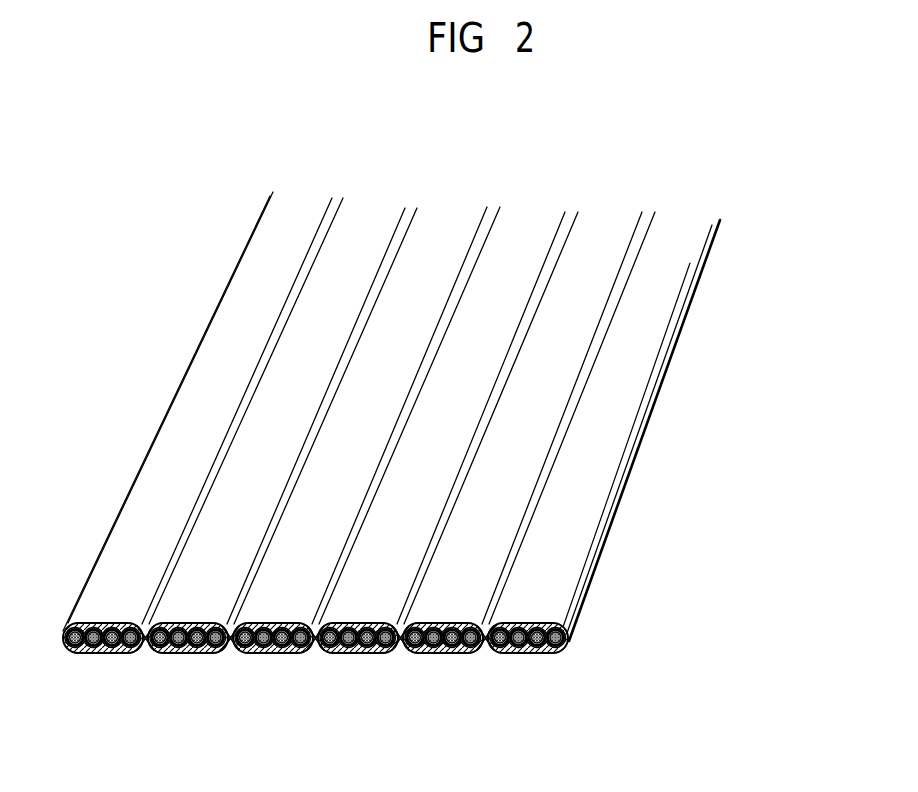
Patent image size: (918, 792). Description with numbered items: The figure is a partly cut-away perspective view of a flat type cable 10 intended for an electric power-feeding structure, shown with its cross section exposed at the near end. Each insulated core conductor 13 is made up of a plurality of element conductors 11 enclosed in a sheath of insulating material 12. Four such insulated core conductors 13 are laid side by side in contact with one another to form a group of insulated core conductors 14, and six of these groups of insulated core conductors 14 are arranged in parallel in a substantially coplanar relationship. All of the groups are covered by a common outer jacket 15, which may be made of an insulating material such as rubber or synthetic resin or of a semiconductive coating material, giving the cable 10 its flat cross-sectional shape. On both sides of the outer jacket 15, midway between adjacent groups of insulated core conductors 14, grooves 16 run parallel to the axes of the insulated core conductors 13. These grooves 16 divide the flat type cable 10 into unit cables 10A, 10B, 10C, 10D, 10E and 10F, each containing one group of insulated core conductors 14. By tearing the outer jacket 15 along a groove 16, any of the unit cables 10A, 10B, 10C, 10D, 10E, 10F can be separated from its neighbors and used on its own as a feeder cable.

The flat type cable 10 is at (660, 423).
The unit cable 10A is at (197, 411).
The unit cable 10B is at (277, 411).
The unit cable 10C is at (360, 415).
The unit cable 10D is at (442, 415).
The unit cable 10E is at (523, 418).
The unit cable 10F is at (572, 418).
The element conductor 11 is at (78, 648).
The sheath of insulating material 12 is at (66, 649).
The insulated core conductor 13 is at (306, 674).
The group of insulated core conductors 14 is at (281, 653).
The outer jacket 15 is at (68, 622).
The groove 16 is at (484, 679).